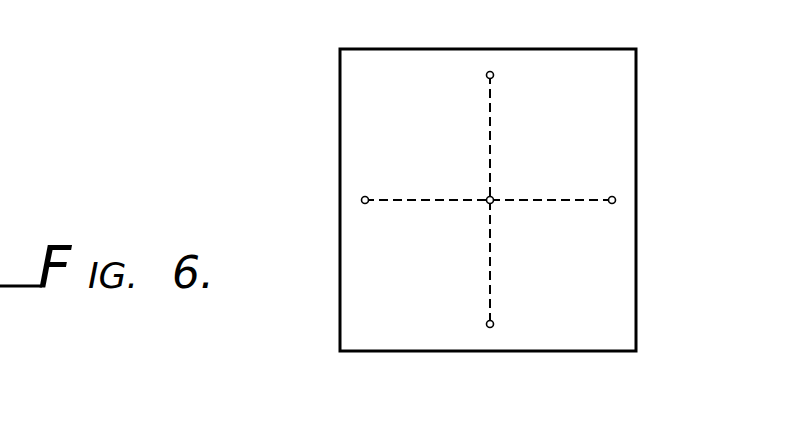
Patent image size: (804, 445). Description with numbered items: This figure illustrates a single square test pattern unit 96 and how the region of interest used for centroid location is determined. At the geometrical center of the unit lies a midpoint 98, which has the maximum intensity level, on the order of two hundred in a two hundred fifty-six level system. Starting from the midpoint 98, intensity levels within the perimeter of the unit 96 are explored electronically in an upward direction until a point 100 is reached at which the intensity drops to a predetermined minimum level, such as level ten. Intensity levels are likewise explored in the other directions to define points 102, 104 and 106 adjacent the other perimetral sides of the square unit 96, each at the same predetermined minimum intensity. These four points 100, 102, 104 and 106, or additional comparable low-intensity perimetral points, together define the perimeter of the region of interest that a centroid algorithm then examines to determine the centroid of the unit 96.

The test pattern unit 96 is at (527, 38).
The midpoint 98 is at (492, 197).
The point 100 is at (494, 75).
The point 102 is at (616, 198).
The point 104 is at (491, 328).
The point 106 is at (362, 198).